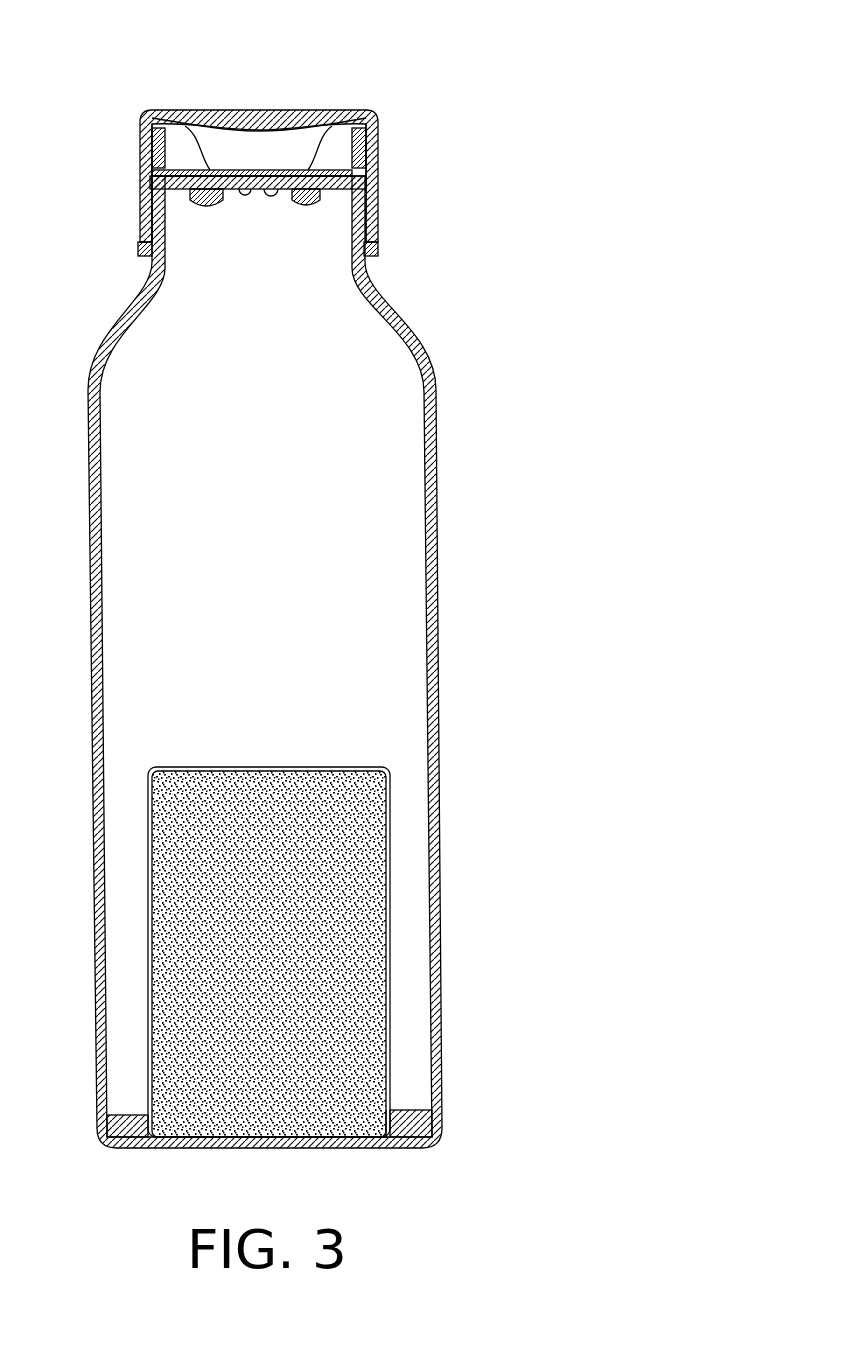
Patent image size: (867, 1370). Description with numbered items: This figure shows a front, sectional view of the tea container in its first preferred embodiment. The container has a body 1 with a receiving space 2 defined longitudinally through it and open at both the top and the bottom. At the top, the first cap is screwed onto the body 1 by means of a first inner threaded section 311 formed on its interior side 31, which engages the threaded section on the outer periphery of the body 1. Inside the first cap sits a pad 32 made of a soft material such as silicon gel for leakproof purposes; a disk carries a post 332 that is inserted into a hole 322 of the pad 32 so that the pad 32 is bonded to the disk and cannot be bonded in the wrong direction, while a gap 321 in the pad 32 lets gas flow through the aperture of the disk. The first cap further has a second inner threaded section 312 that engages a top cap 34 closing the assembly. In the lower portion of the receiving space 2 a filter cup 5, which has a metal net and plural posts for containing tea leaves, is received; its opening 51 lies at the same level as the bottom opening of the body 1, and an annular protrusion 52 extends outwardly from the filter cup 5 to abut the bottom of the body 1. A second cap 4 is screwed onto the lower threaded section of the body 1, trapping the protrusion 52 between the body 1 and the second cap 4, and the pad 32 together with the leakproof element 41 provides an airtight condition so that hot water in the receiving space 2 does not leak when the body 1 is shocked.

The body 1 is at (468, 582).
The receiving space 2 is at (360, 430).
The interior side 31 is at (365, 177).
The first inner threaded section 311 is at (378, 250).
The second inner threaded section 312 is at (366, 112).
The pad 32 is at (210, 250).
The gap 321 is at (245, 198).
The hole 322 is at (197, 210).
The post 332 is at (208, 168).
The top cap 34 is at (250, 118).
The second cap 4 is at (313, 1127).
The leakproof element 41 is at (417, 1107).
The filter cup 5 is at (325, 935).
The opening 51 is at (290, 1147).
The annular protrusion 52 is at (436, 1125).